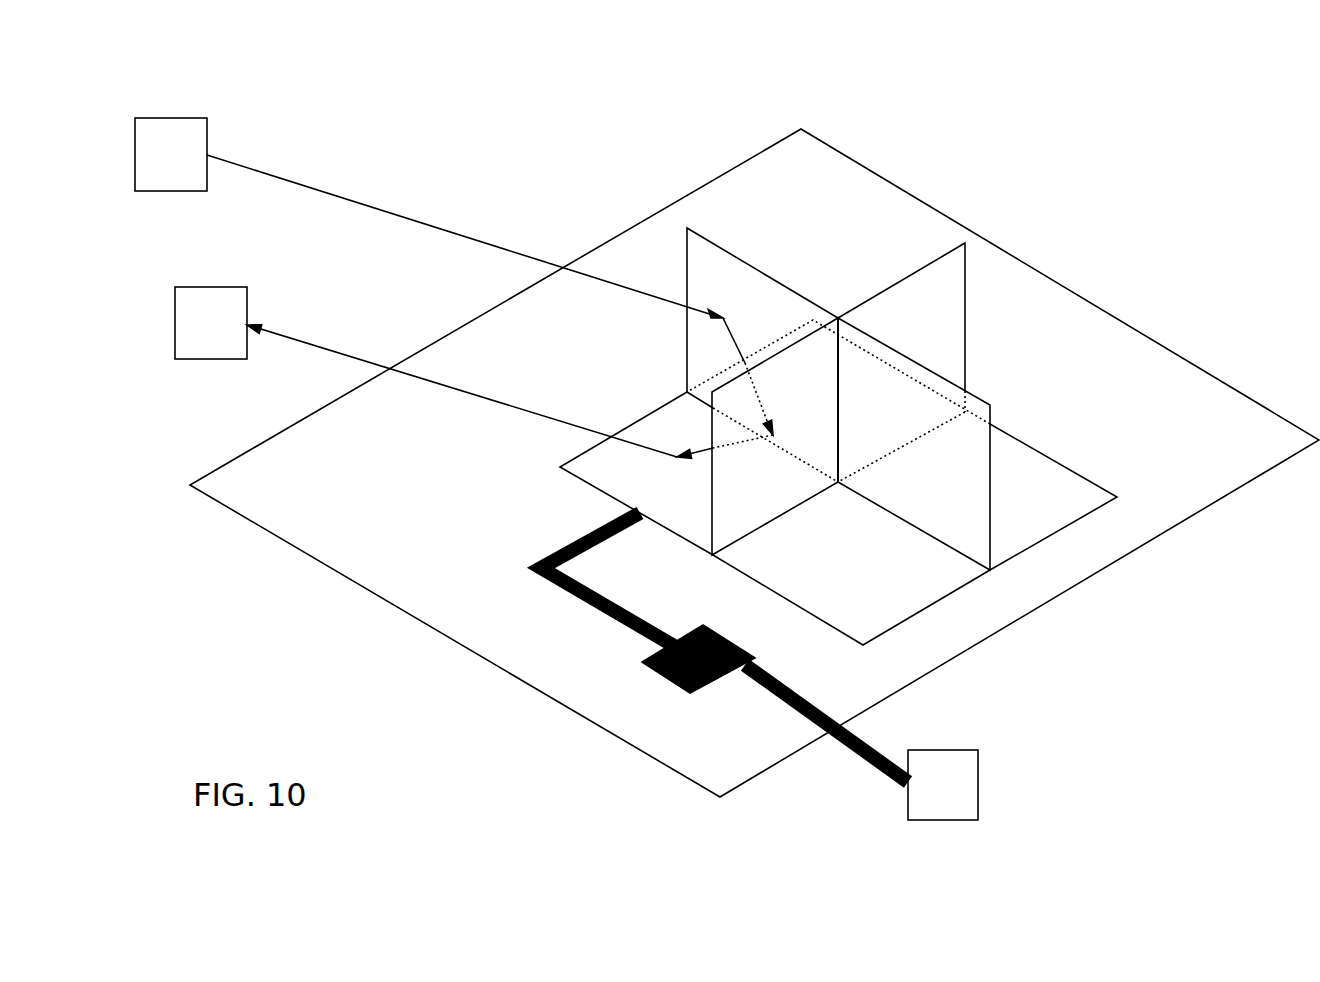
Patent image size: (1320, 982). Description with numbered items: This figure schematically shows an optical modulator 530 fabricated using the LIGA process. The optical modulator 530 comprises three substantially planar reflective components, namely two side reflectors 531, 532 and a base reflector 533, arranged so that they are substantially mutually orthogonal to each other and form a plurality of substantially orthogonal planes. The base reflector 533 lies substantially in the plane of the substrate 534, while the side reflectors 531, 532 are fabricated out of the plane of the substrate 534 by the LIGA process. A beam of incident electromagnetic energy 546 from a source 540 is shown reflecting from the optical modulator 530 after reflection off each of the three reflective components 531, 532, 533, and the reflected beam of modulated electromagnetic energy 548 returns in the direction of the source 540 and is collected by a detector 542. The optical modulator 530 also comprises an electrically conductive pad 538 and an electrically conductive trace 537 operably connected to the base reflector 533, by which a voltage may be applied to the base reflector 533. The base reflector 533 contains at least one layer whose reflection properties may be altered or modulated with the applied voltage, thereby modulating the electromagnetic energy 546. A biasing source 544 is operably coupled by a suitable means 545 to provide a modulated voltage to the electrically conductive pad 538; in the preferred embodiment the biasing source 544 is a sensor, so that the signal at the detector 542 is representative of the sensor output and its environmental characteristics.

The optical modulator 530 is at (754, 429).
The side reflector 531 is at (783, 425).
The side reflector 532 is at (713, 301).
The base reflector 533 is at (658, 503).
The substrate 534 is at (487, 660).
The electrically conductive trace 537 is at (586, 606).
The electrically conductive pad 538 is at (725, 638).
The source 540 is at (173, 118).
The detector 542 is at (175, 325).
The biasing source 544 is at (980, 784).
The suitable means 545 is at (757, 704).
The beam of incident electromagnetic energy 546 is at (391, 213).
The reflected beam of modulated electromagnetic energy 548 is at (337, 352).